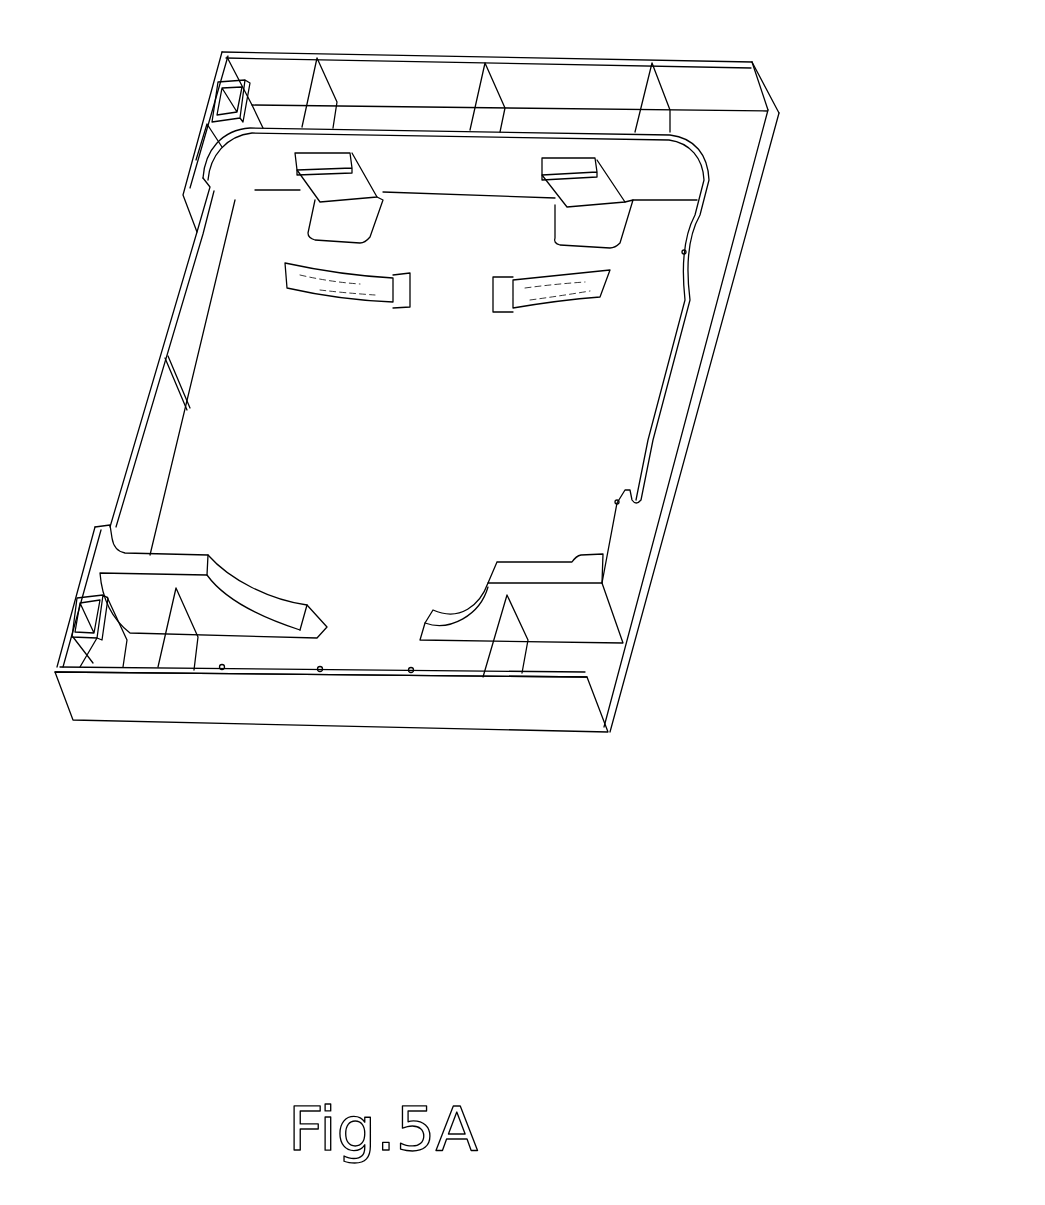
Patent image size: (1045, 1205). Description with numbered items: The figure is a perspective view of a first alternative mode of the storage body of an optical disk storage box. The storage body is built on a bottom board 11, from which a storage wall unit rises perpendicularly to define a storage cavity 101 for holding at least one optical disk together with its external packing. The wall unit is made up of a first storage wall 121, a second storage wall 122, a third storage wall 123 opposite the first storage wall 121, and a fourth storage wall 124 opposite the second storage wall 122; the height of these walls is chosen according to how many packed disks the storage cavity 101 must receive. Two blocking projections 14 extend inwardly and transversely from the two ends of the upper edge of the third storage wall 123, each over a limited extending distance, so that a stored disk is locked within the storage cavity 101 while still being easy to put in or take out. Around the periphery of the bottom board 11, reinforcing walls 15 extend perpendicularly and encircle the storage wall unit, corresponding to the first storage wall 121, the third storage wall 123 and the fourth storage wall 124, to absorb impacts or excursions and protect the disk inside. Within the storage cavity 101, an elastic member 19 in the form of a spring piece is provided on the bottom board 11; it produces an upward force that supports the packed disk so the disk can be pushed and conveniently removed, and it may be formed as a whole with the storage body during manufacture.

The storage cavity 101 is at (437, 475).
The bottom board 11 is at (415, 507).
The blocking projection 14 is at (122, 548).
The reinforcing wall 15 is at (168, 688).
The elastic member 19 is at (313, 282).
The first storage wall 121 is at (455, 160).
The second storage wall 122 is at (710, 250).
The third storage wall 123 is at (460, 630).
The fourth storage wall 124 is at (150, 475).